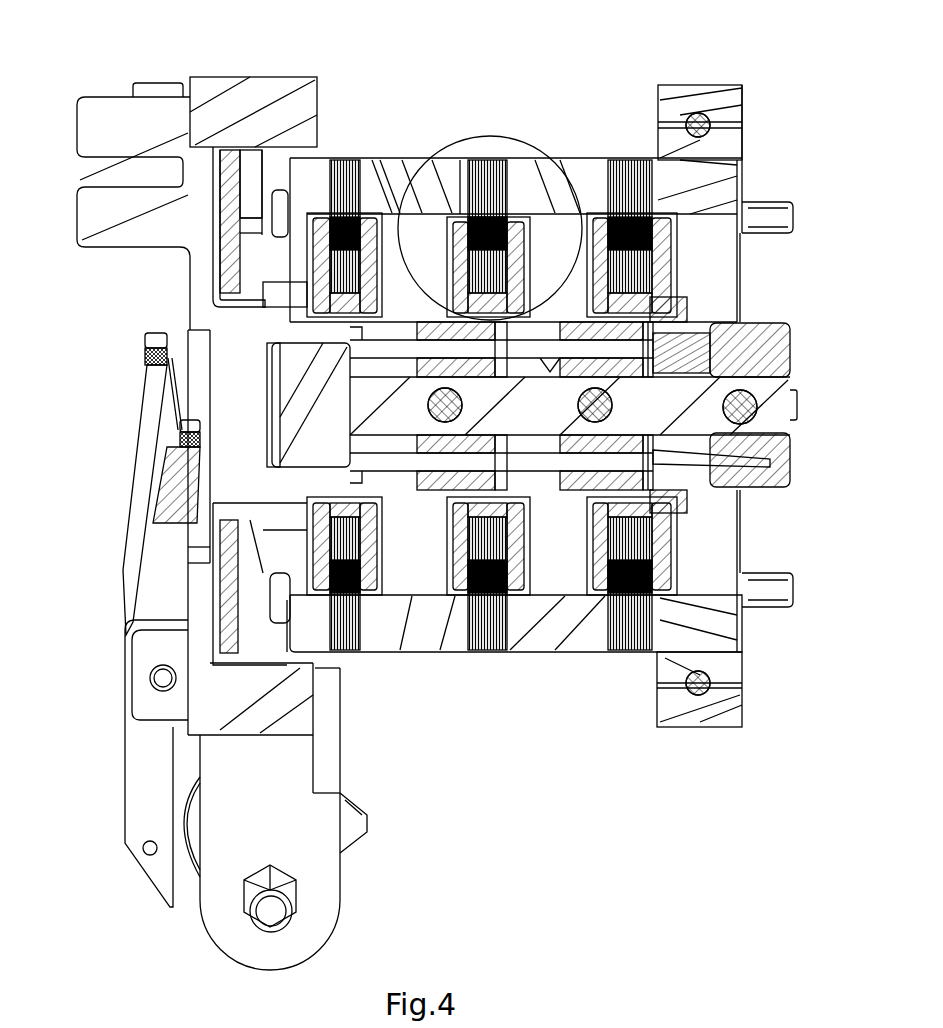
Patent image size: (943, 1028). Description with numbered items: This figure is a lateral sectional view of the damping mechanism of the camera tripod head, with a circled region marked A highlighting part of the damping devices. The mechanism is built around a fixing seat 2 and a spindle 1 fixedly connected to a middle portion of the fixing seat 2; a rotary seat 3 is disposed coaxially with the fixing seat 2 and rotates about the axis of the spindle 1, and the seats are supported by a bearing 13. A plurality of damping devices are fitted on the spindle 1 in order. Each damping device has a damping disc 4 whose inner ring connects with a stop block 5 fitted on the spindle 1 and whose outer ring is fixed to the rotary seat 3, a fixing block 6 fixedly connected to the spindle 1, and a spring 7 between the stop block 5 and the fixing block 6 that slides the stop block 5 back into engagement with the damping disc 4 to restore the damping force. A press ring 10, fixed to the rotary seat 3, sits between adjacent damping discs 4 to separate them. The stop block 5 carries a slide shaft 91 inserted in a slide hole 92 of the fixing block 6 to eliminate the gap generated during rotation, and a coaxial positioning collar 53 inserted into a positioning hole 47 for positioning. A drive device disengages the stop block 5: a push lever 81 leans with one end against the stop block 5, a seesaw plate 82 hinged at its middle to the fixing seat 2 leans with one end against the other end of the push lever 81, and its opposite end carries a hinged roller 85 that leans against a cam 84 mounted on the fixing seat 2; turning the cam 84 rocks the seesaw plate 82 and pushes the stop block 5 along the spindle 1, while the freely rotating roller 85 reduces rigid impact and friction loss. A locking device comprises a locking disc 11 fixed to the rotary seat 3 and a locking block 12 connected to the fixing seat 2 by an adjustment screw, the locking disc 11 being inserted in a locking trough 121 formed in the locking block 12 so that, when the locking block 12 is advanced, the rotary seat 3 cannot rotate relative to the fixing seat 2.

The spindle 1 is at (845, 444).
The fixing seat 2 is at (195, 265).
The rotary seat 3 is at (320, 210).
The damping disc 4 is at (475, 213).
The stop block 5 is at (740, 317).
The fixing block 6 is at (780, 367).
The spring 7 is at (707, 360).
The press ring 10 is at (393, 180).
The locking disc 11 is at (223, 145).
The locking block 12 is at (308, 183).
The bearing 13 is at (695, 100).
The positioning hole 47 is at (668, 512).
The positioning collar 53 is at (640, 498).
The push lever 81 is at (190, 367).
The seesaw plate 82 is at (17, 500).
The cam 84 is at (190, 843).
The roller 85 is at (50, 840).
The slide shaft 91 is at (735, 345).
The slide hole 92 is at (780, 462).
The locking trough 121 is at (228, 150).
The detail A is at (510, 195).